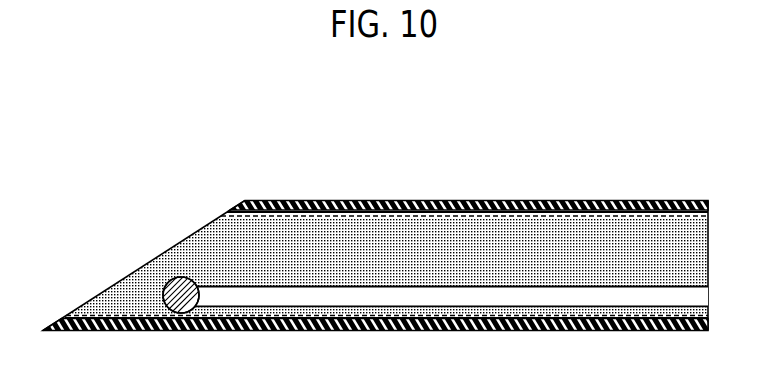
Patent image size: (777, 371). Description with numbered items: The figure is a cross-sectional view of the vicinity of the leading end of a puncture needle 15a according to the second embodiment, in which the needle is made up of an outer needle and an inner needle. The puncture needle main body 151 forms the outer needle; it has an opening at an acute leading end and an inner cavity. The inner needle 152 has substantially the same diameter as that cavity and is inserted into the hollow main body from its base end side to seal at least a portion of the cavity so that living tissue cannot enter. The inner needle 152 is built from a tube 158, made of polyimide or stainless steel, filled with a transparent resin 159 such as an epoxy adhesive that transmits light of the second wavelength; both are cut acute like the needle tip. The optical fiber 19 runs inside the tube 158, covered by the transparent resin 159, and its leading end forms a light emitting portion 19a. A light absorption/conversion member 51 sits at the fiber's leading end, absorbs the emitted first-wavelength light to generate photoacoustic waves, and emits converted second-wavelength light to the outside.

The puncture needle 15a is at (562, 144).
The optical fiber 19 is at (560, 286).
The light emitting portion 19a is at (167, 287).
The light absorption/conversion member 51 is at (160, 295).
The puncture needle main body 151 is at (288, 200).
The inner needle 152 is at (443, 215).
The tube 158 is at (663, 210).
The transparent resin 159 is at (342, 242).